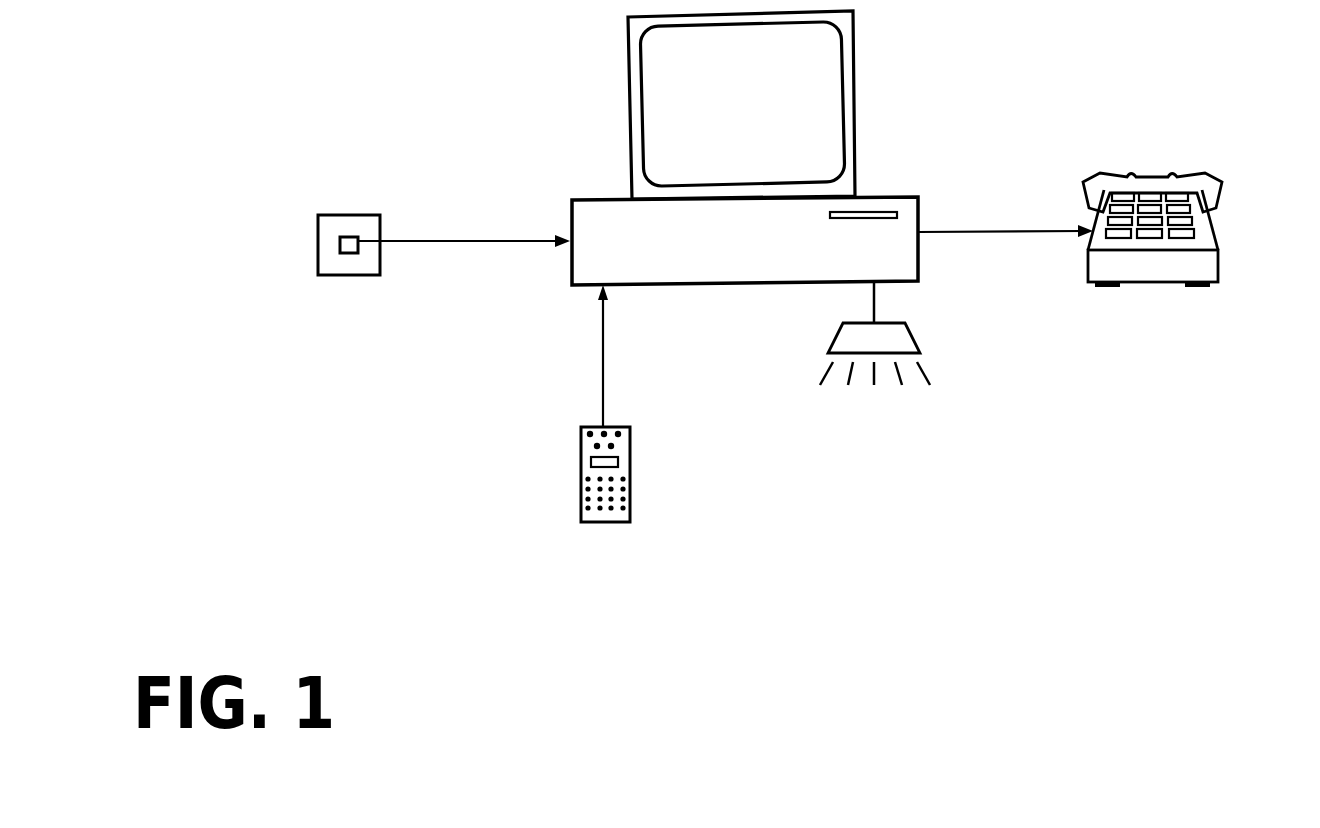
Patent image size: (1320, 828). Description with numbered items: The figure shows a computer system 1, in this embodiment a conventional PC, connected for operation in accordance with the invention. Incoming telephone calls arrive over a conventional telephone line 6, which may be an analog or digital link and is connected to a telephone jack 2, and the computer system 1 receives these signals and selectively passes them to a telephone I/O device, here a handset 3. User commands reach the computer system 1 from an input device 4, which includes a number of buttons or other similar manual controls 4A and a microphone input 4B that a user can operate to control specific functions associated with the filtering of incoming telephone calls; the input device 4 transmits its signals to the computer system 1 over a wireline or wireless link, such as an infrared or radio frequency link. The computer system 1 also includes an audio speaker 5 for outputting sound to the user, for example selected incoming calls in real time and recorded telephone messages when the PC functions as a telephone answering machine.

The computer system 1 is at (891, 197).
The telephone jack 2 is at (357, 214).
The telephone I/O device (handset) 3 is at (1222, 256).
The input device 4 is at (615, 406).
The buttons (manual controls) 4A is at (630, 447).
The microphone input 4B is at (630, 490).
The audio speaker 5 is at (915, 340).
The telephone line 6 is at (455, 241).